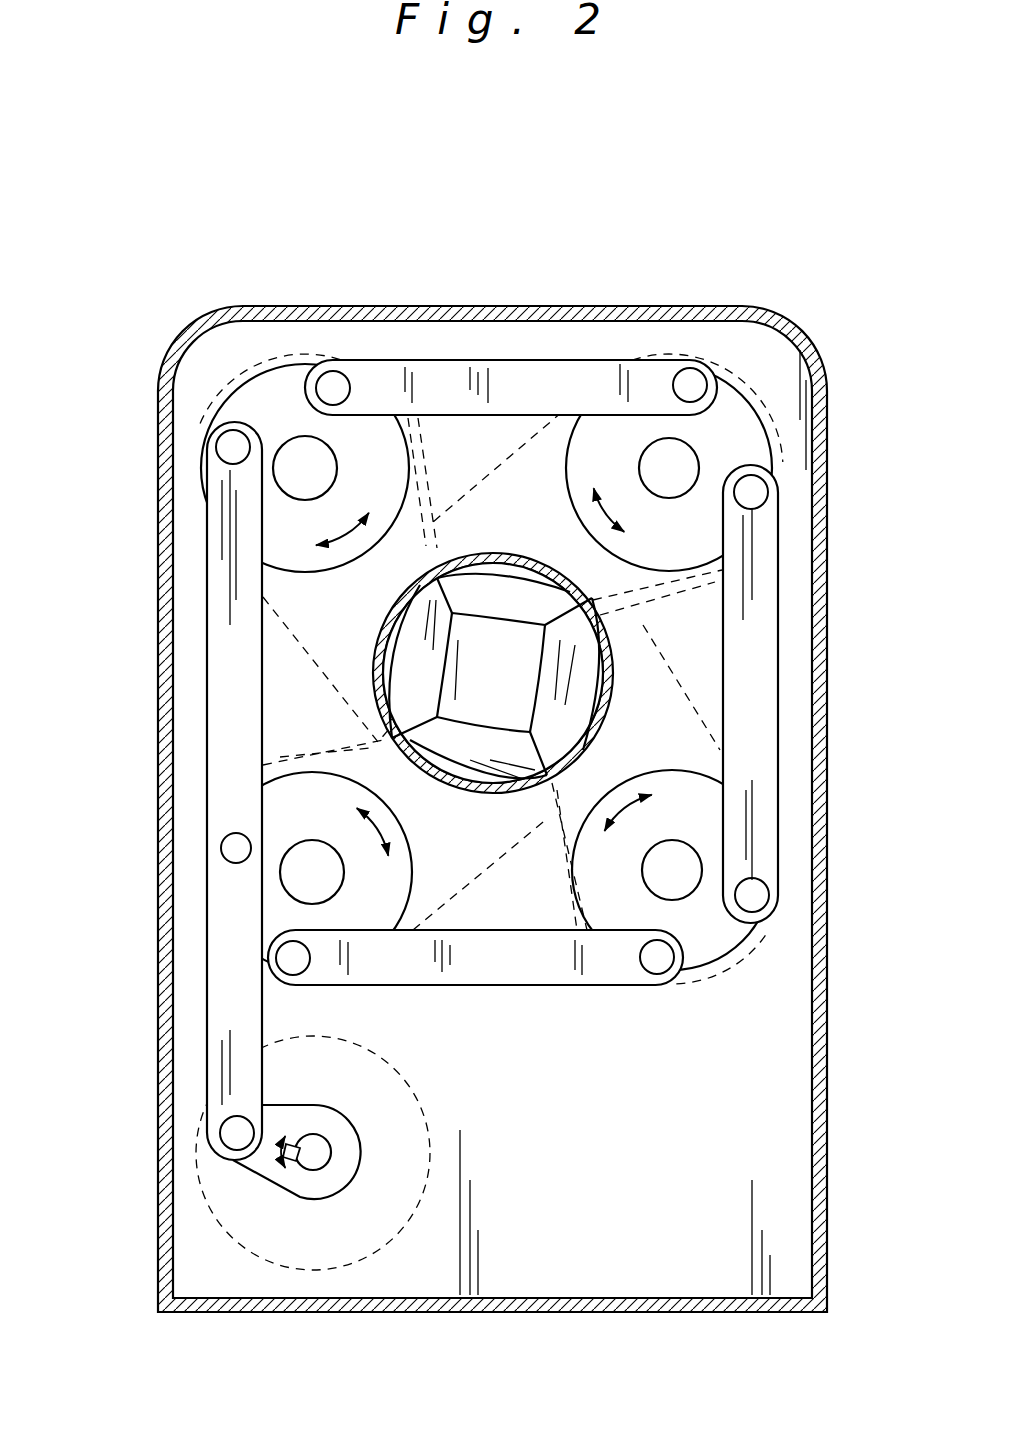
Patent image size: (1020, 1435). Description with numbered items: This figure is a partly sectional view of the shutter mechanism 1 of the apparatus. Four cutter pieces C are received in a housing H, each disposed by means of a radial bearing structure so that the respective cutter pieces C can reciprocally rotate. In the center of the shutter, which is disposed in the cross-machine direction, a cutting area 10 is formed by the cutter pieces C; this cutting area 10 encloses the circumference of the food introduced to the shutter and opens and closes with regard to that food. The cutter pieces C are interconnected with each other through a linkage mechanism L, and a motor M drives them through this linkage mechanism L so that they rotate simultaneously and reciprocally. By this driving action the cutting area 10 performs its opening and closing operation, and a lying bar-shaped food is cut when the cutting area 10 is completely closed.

The shutter mechanism 1 is at (666, 288).
The housing H is at (320, 312).
The linkage mechanism L is at (436, 390).
The cutter pieces C is at (522, 500).
The motor M is at (225, 1222).
The cutting area 10 is at (500, 665).